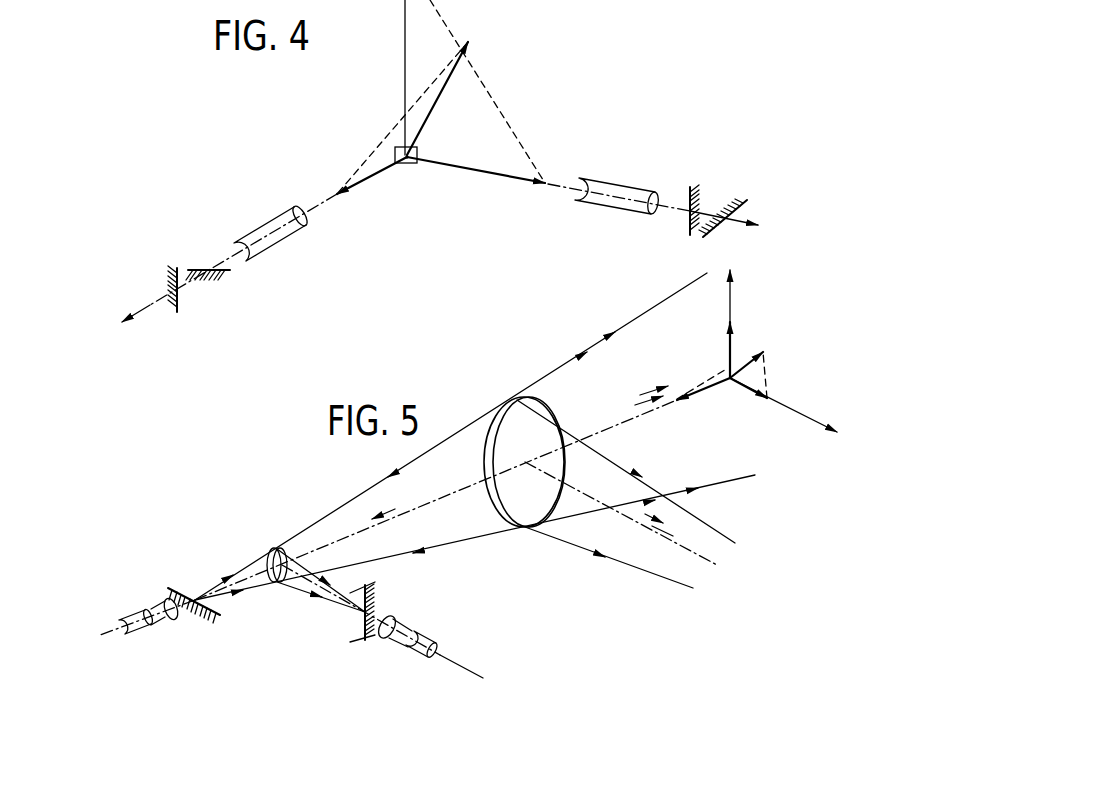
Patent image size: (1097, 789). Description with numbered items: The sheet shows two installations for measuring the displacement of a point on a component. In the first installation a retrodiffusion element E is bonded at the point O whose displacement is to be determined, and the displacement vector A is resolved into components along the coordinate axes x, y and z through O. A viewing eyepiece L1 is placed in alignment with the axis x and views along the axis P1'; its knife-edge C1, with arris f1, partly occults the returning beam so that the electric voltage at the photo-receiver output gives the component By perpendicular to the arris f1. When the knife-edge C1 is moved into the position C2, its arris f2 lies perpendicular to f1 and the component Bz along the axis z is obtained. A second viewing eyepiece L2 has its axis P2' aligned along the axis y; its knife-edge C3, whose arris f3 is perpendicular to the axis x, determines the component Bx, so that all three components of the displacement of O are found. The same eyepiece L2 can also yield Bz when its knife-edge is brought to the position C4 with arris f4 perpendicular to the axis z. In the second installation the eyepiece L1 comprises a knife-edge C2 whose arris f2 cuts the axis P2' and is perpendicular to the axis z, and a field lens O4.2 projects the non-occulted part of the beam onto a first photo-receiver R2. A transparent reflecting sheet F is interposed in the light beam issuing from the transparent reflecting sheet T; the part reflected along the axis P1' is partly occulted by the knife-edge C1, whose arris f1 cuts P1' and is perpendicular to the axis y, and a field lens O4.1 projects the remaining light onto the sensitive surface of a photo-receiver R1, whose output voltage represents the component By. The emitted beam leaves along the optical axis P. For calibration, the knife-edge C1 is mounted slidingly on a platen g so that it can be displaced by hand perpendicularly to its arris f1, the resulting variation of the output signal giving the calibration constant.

In FIG. 4, the displacement vector A is at (448, 92).
In FIG. 5, the displacement vector A is at (756, 357).
In FIG. 4, the retrodiffusion element E is at (420, 151).
In FIG. 4, the point O is at (406, 170).
In FIG. 4, the component Bx of the displacement Bx is at (359, 175).
In FIG. 5, the component Bx of the displacement Bx is at (703, 397).
In FIG. 4, the component By of the displacement By is at (476, 185).
In FIG. 5, the component By of the displacement By is at (750, 391).
In FIG. 5, the component Bz of the displacement Bz is at (763, 352).
In FIG. 4, the axis Ox x is at (224, 258).
In FIG. 4, the axis Oy y is at (662, 211).
In FIG. 5, the axis Oy y is at (788, 415).
In FIG. 5, the axis Oz z is at (738, 321).
In FIG. 4, the viewing eyepiece L1 is at (271, 226).
In FIG. 4, the viewing eyepiece L2 is at (629, 190).
In FIG. 4, the axis p'1 P1' is at (217, 219).
In FIG. 5, the axis p'1 P1' is at (312, 615).
In FIG. 4, the axis p'2 P2' is at (655, 164).
In FIG. 5, the axis p'2 P2' is at (264, 609).
In FIG. 4, the arris of knife-edge C1 f1 is at (182, 301).
In FIG. 5, the arris of knife-edge C1 f1 is at (362, 627).
In FIG. 4, the arris of knife-edge C2 f2 is at (208, 268).
In FIG. 5, the arris of knife-edge C2 f2 is at (190, 590).
In FIG. 4, the arris of knife-edge C3 f3 is at (686, 200).
In FIG. 4, the arris of knife-edge C4 f4 is at (733, 214).
In FIG. 4, the knife-edge C1 is at (172, 302).
In FIG. 5, the knife-edge C1 is at (372, 642).
In FIG. 4, the knife-edge C2 is at (229, 276).
In FIG. 5, the knife-edge C2 is at (215, 618).
In FIG. 4, the knife-edge C3 is at (690, 231).
In FIG. 4, the knife-edge C4 is at (738, 212).
In FIG. 4, the platen g is at (177, 268).
In FIG. 5, the platen g is at (376, 583).
In FIG. 5, the transparent reflecting sheet T is at (506, 407).
In FIG. 5, the optical axis of emitted beam P is at (588, 494).
In FIG. 5, the transparent reflecting sheet F is at (279, 552).
In FIG. 5, the photo-receiver R1 is at (422, 637).
In FIG. 5, the photo-receiver R2 is at (128, 620).
In FIG. 5, the field lens O4.1 is at (389, 616).
In FIG. 5, the field lens O4.2 is at (172, 621).